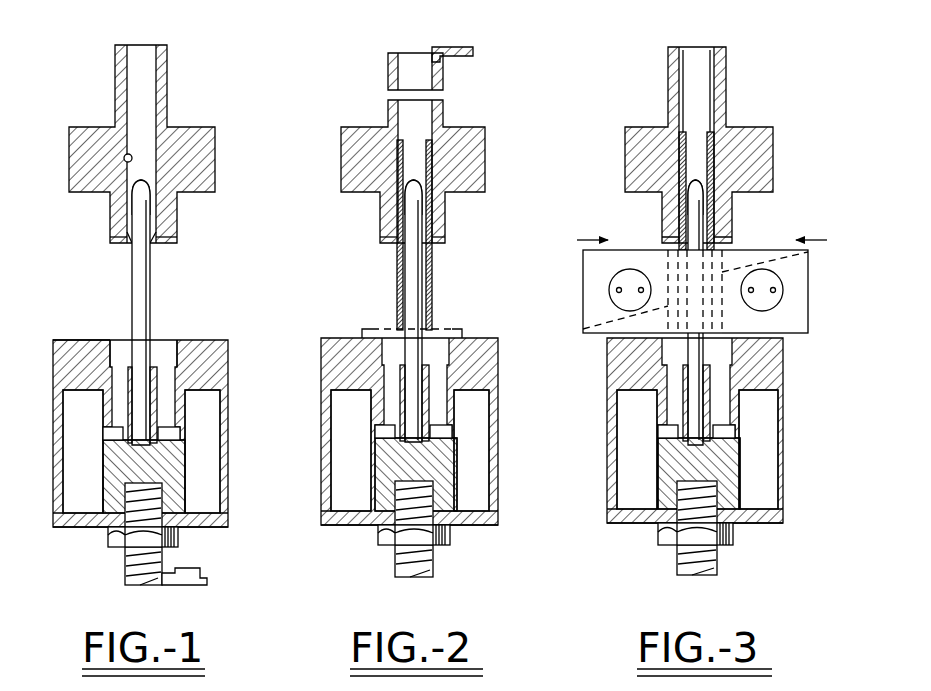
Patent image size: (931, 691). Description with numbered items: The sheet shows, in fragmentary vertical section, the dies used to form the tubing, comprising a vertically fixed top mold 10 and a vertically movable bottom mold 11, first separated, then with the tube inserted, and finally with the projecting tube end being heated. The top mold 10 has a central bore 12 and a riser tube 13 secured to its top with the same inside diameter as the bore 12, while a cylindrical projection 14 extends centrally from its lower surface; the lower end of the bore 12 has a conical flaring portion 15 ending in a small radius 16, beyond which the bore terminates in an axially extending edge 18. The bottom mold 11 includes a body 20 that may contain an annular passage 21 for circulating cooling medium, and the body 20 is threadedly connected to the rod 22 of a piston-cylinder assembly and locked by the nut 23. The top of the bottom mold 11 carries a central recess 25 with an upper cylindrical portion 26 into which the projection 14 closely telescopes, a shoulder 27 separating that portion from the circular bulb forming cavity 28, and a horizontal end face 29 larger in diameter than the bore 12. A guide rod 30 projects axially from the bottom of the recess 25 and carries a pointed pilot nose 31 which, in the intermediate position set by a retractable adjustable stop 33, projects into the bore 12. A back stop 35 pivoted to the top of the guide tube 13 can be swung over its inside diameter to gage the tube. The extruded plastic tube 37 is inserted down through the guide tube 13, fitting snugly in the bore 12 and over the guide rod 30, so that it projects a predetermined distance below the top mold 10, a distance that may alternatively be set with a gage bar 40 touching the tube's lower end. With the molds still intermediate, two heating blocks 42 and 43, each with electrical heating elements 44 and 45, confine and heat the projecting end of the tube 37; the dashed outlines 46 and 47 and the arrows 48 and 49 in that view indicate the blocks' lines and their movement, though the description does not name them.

In FIG. 1, the top mold 10 is at (129, 161).
In FIG. 2, the top mold 10 is at (429, 141).
In FIG. 3, the top mold 10 is at (713, 137).
In FIG. 1, the bottom mold 11 is at (141, 426).
In FIG. 2, the bottom mold 11 is at (412, 454).
In FIG. 3, the bottom mold 11 is at (717, 453).
In FIG. 1, the central bore 12 is at (124, 158).
In FIG. 1, the riser tube 13 is at (117, 58).
In FIG. 2, the riser tube 13 is at (390, 60).
In FIG. 3, the riser tube 13 is at (670, 58).
In FIG. 1, the cylindrical projection 14 is at (177, 214).
In FIG. 2, the cylindrical projection 14 is at (446, 213).
In FIG. 3, the cylindrical projection 14 is at (733, 214).
In FIG. 1, the conical flaring portion 15 is at (130, 240).
In FIG. 2, the conical flaring portion 15 is at (435, 250).
In FIG. 1, the small radius 16 is at (112, 243).
In FIG. 2, the small radius 16 is at (385, 243).
In FIG. 1, the axially extending edge 18 is at (166, 243).
In FIG. 1, the body 20 is at (65, 527).
In FIG. 2, the body 20 is at (478, 527).
In FIG. 3, the body 20 is at (766, 527).
In FIG. 1, the annular passage 21 is at (212, 462).
In FIG. 2, the annular passage 21 is at (350, 484).
In FIG. 3, the annular passage 21 is at (632, 466).
In FIG. 1, the rod 22 is at (128, 570).
In FIG. 2, the rod 22 is at (396, 568).
In FIG. 3, the rod 22 is at (678, 568).
In FIG. 1, the nut 23 is at (108, 538).
In FIG. 2, the nut 23 is at (380, 538).
In FIG. 3, the nut 23 is at (660, 538).
In FIG. 1, the central recess 25 is at (145, 441).
In FIG. 1, the upper cylindrical portion 26 is at (120, 345).
In FIG. 1, the shoulder 27 is at (55, 345).
In FIG. 1, the circular bulb forming cavity 28 is at (165, 420).
In FIG. 2, the circular bulb forming cavity 28 is at (440, 415).
In FIG. 3, the circular bulb forming cavity 28 is at (722, 420).
In FIG. 1, the end face 29 is at (120, 423).
In FIG. 2, the end face 29 is at (390, 378).
In FIG. 3, the end face 29 is at (670, 390).
In FIG. 1, the guide rod 30 is at (151, 280).
In FIG. 2, the guide rod 30 is at (419, 283).
In FIG. 3, the guide rod 30 is at (699, 410).
In FIG. 1, the pilot nose 31 is at (136, 200).
In FIG. 2, the pilot nose 31 is at (408, 200).
In FIG. 3, the pilot nose 31 is at (690, 202).
In FIG. 1, the retractable adjustable stop 33 is at (207, 583).
In FIG. 2, the back stop 35 is at (470, 47).
In FIG. 2, the tube section 37 is at (397, 280).
In FIG. 3, the tube section 37 is at (690, 87).
In FIG. 2, the gage bar 40 is at (370, 328).
In FIG. 3, the heating block 42 is at (700, 296).
In FIG. 3, the heating block 43 is at (808, 330).
In FIG. 3, the electrical heating element 44 is at (609, 290).
In FIG. 3, the electrical heating element 45 is at (783, 290).
In FIG. 3, the left guide line 46 is at (583, 328).
In FIG. 3, the right guide line 47 is at (808, 258).
In FIG. 3, the direction arrow 48 is at (577, 240).
In FIG. 3, the direction arrow 49 is at (827, 240).